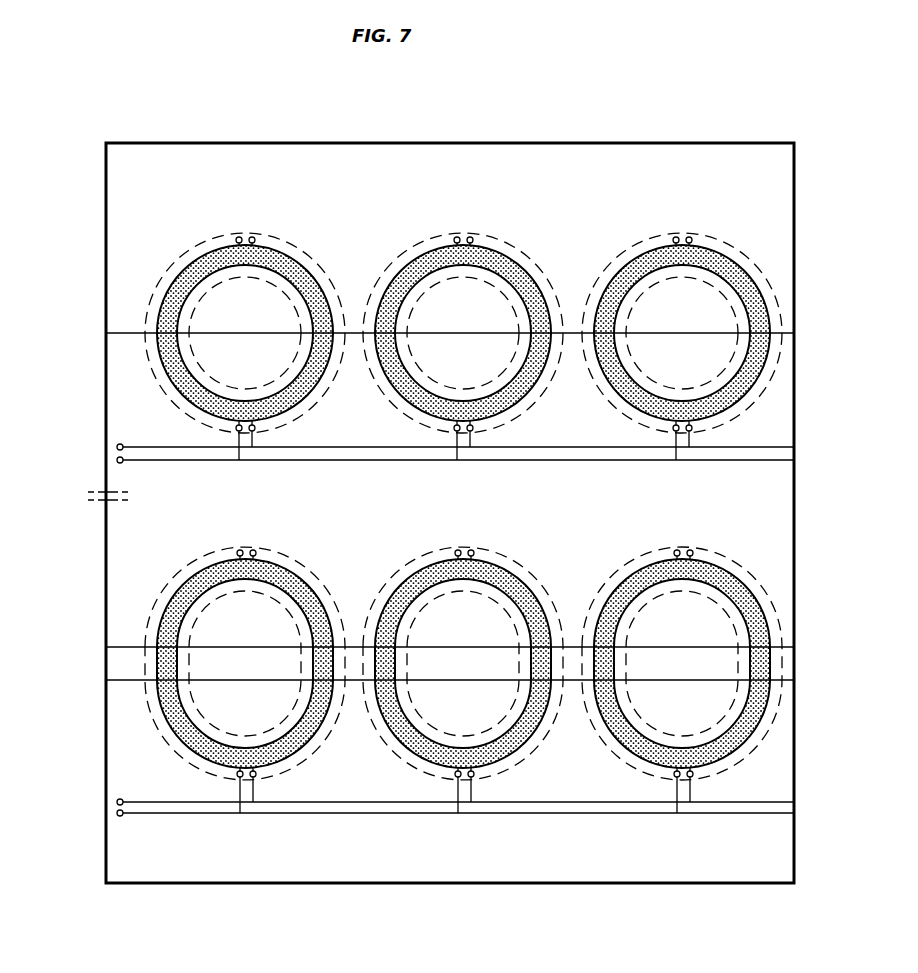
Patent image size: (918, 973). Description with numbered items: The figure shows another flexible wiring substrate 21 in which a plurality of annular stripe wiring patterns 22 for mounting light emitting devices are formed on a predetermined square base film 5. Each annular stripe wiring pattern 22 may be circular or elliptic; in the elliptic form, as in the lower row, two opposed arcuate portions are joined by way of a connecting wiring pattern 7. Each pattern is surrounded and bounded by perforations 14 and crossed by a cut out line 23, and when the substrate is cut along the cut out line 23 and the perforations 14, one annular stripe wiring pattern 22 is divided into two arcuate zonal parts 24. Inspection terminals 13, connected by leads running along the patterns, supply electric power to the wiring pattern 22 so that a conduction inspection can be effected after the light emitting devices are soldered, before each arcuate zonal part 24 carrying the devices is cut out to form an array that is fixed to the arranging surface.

The square base film 5 is at (382, 162).
The connecting wiring pattern 7 is at (163, 672).
The inspection terminals 13 is at (117, 458).
The perforations 14 is at (212, 378).
The flexible wiring substrate 21 is at (216, 141).
The annular stripe wiring pattern 22 is at (367, 197).
The cut out line 23 is at (120, 333).
The arcuate zonal part 24 is at (208, 265).